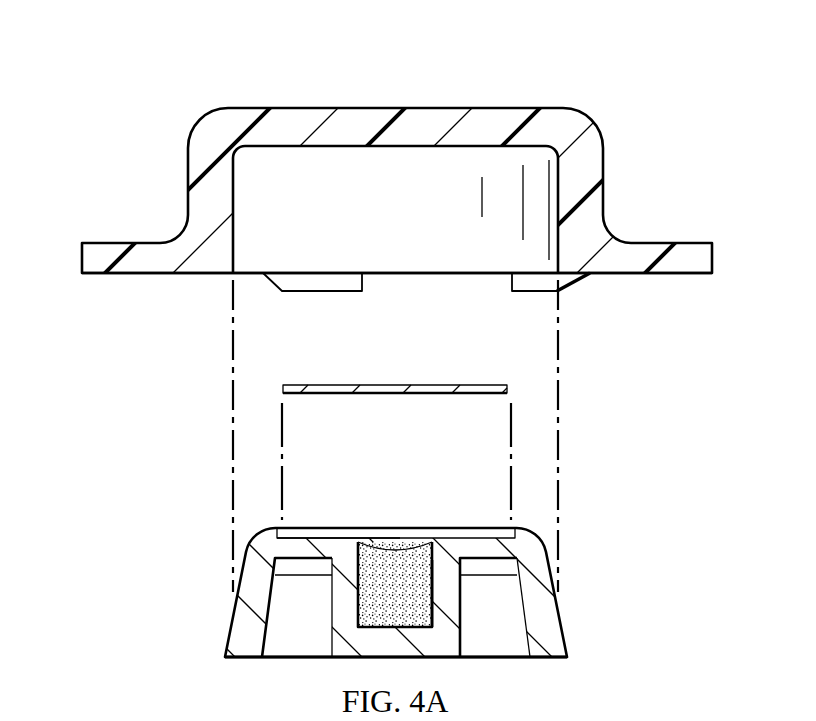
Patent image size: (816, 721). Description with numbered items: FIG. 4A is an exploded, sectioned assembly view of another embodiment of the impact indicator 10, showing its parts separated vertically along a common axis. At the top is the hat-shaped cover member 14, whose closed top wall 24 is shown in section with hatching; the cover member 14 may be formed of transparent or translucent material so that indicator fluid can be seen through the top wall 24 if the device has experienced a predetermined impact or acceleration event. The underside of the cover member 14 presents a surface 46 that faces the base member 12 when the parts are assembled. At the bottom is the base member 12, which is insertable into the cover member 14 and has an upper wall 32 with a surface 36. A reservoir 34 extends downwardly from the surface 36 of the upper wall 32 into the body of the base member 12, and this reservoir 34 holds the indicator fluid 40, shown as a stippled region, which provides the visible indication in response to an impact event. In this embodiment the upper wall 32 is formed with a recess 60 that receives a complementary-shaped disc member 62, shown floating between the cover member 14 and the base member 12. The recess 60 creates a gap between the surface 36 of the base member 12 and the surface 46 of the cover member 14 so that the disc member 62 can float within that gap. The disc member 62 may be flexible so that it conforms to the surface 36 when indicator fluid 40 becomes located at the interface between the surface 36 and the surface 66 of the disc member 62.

The impact indicator 10 is at (150, 64).
The base member 12 is at (569, 621).
The cover member 14 is at (578, 105).
The top wall 24 is at (297, 107).
The upper wall 32 is at (470, 537).
The reservoir 34 is at (434, 578).
The surface 36 is at (320, 537).
The indicator fluid 40 is at (397, 552).
The surface 46 is at (340, 148).
The recess 60 is at (350, 532).
The disc member 62 is at (326, 379).
The surface 66 is at (428, 395).